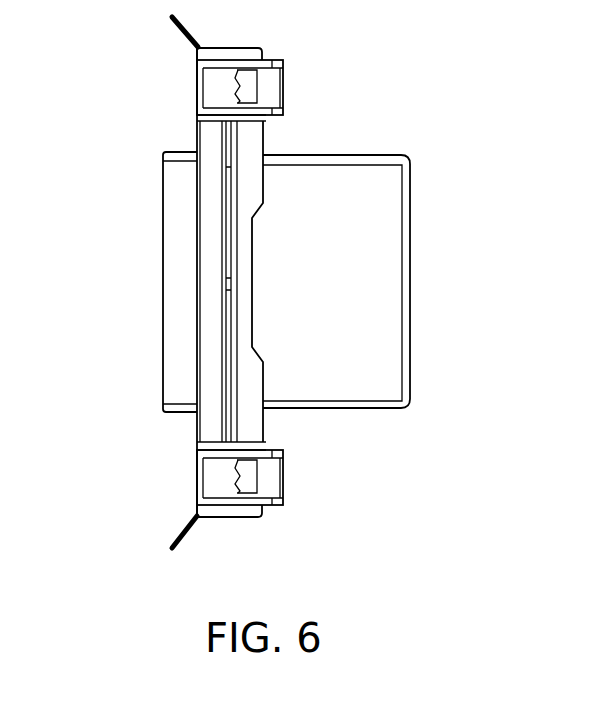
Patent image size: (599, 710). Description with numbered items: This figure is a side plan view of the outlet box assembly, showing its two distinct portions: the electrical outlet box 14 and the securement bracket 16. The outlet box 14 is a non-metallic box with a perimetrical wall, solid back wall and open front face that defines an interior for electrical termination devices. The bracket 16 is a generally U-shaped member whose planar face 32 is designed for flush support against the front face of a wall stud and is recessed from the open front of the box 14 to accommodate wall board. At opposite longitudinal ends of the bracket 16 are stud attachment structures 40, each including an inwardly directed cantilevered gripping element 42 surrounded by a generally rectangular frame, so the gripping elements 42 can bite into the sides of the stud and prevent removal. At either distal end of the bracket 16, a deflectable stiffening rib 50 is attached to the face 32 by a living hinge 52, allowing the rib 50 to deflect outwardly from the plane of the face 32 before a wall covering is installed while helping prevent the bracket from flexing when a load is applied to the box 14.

The electrical outlet box 14 is at (368, 287).
The securement bracket 16 is at (203, 317).
The planar face 32 is at (195, 255).
The stud attachment structure 40 is at (268, 91).
The cantilevered gripping element 42 is at (240, 478).
The deflectable stiffening rib 50 is at (187, 33).
The living hinge 52 is at (200, 47).